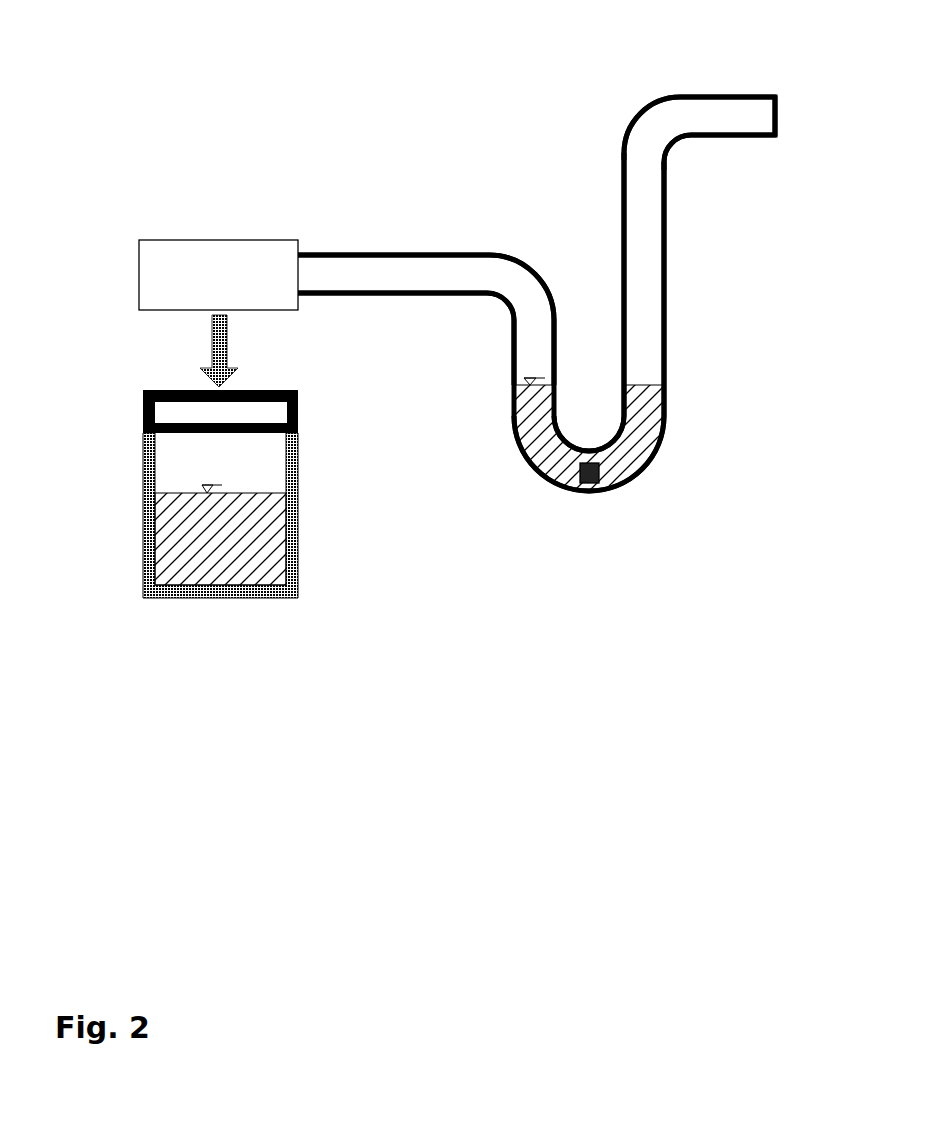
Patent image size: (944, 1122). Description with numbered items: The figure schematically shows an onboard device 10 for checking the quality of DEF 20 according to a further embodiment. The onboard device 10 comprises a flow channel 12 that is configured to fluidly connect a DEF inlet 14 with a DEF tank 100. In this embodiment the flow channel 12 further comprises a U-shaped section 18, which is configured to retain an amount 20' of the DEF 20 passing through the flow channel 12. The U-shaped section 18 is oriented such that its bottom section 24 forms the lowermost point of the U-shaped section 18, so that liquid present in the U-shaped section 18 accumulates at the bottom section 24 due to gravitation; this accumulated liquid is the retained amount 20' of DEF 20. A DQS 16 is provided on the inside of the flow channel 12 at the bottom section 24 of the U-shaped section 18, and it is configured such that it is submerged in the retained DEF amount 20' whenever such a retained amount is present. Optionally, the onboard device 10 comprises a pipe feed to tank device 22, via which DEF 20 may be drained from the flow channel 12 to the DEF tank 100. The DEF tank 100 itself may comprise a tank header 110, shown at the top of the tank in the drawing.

The onboard device 10 is at (580, 113).
The flow channel 12 is at (523, 331).
The DEF inlet 14 is at (776, 114).
The DQS 16 is at (567, 493).
The U-shaped section 18 is at (645, 490).
The DEF 20 is at (223, 606).
The retained amount of DEF 20' is at (540, 439).
The pipe feed to tank device 22 is at (250, 277).
The bottom section 24 is at (587, 495).
The DEF tank 100 is at (145, 517).
The tank header 110 is at (143, 400).